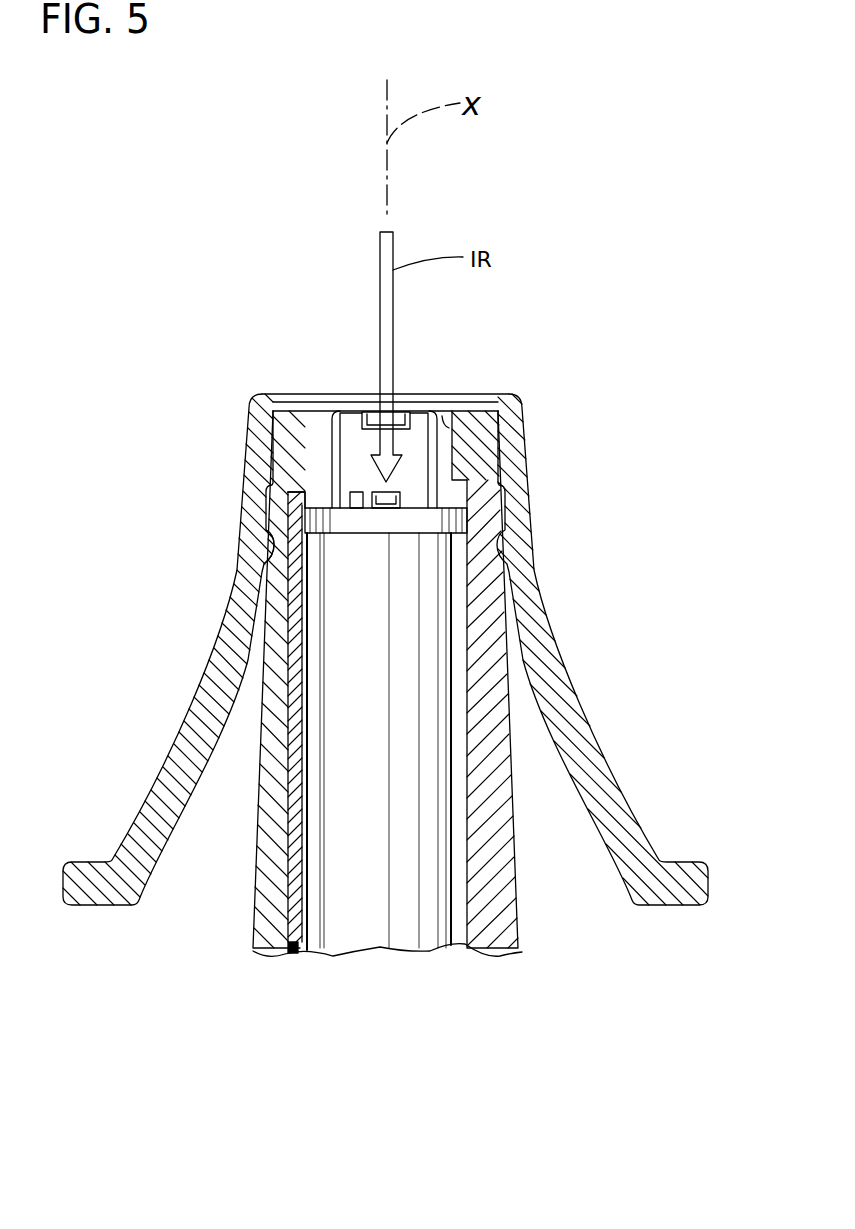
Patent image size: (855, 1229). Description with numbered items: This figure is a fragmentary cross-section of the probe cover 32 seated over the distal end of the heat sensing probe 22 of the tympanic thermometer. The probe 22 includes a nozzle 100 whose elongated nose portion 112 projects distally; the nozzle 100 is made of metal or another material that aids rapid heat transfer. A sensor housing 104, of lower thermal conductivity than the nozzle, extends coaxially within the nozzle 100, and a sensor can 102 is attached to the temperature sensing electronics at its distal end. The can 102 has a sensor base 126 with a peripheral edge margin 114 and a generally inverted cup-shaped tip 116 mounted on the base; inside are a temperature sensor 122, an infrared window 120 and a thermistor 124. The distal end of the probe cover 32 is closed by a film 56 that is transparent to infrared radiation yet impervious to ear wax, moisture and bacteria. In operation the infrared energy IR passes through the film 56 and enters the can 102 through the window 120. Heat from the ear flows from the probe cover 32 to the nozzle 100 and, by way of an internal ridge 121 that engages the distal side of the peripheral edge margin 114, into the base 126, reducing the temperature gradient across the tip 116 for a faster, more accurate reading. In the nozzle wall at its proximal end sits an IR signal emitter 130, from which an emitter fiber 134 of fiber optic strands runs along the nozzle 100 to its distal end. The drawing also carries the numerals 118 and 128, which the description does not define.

The heat sensing probe 22 is at (505, 607).
The probe cover 32 is at (208, 657).
The film 56 is at (403, 397).
The nozzle 100 is at (265, 905).
The sensor can 102 is at (324, 444).
The sensor housing 104 is at (408, 713).
The elongated nose portion 112 is at (290, 517).
The peripheral edge margin 114 is at (454, 506).
The tip 116 is at (348, 417).
The cartridge wall 118 is at (313, 851).
The infrared filter or window 120 is at (404, 418).
The internal ridge 121 is at (455, 527).
The temperature sensor 122 is at (447, 430).
The thermistor 124 is at (357, 492).
The sensor base 126 is at (288, 573).
The detector 128 is at (393, 490).
The IR signal emitter 130 is at (298, 953).
The emitter fiber 134 is at (290, 768).